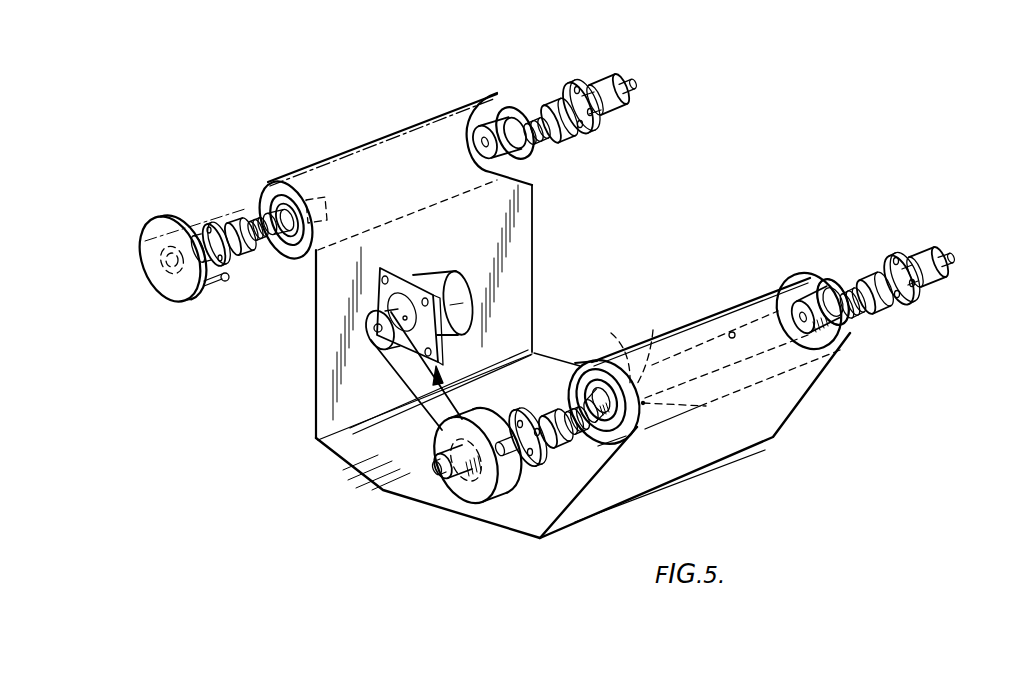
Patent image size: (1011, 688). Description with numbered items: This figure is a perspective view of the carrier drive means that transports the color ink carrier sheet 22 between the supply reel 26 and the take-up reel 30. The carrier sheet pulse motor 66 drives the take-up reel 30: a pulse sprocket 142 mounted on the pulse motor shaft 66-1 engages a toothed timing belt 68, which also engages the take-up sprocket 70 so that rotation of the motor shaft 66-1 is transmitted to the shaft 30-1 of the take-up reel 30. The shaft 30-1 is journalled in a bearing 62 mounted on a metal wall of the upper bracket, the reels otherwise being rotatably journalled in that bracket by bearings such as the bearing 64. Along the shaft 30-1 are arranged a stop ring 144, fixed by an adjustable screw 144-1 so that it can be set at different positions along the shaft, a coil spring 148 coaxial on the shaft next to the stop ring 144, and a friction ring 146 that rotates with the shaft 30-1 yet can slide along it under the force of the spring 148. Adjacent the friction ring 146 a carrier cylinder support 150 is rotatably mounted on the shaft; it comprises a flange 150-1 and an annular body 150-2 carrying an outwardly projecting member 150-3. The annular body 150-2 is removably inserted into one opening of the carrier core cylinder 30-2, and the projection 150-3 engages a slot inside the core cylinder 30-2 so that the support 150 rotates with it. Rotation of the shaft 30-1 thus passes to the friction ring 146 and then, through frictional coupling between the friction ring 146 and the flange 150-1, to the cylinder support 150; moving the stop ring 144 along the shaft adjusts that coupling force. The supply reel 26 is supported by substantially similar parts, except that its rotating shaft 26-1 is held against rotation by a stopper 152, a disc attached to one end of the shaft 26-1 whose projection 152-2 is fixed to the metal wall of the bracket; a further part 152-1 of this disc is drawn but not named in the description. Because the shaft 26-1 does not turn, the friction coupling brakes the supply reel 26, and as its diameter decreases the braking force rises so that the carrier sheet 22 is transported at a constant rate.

The color ink carrier sheet 22 is at (538, 272).
The supply reel 26 is at (352, 165).
The rotating shaft 26-1 is at (236, 262).
The take-up reel 30 is at (681, 333).
The shaft 30-1 is at (545, 412).
The carrier core cylinder 30-2 is at (732, 330).
The bearing 62 is at (531, 466).
The bearing 64 is at (603, 121).
The carrier sheet pulse motor 66 is at (445, 280).
The pulse motor shaft 66-1 is at (372, 332).
The toothed timing belt 68 is at (472, 368).
The take-up sprocket 70 is at (470, 495).
The pulse sprocket 142 is at (380, 350).
The stop ring 144 is at (240, 226).
The screw 144-1 is at (228, 226).
The friction ring 146 is at (275, 213).
The coil spring 148 is at (263, 255).
The carrier cylinder support 150 is at (280, 262).
The flange 150-1 is at (624, 430).
The annular body 150-2 is at (622, 352).
The outwardly projecting member 150-3 is at (710, 408).
The stopper 152 is at (140, 235).
The disk hub 152-1 is at (157, 276).
The projection 152-2 is at (217, 287).